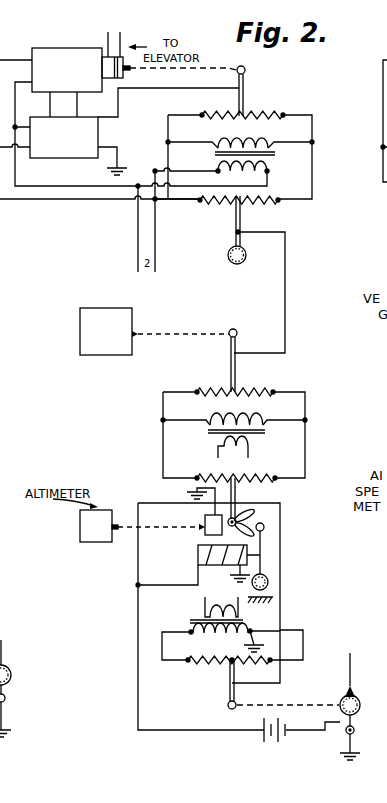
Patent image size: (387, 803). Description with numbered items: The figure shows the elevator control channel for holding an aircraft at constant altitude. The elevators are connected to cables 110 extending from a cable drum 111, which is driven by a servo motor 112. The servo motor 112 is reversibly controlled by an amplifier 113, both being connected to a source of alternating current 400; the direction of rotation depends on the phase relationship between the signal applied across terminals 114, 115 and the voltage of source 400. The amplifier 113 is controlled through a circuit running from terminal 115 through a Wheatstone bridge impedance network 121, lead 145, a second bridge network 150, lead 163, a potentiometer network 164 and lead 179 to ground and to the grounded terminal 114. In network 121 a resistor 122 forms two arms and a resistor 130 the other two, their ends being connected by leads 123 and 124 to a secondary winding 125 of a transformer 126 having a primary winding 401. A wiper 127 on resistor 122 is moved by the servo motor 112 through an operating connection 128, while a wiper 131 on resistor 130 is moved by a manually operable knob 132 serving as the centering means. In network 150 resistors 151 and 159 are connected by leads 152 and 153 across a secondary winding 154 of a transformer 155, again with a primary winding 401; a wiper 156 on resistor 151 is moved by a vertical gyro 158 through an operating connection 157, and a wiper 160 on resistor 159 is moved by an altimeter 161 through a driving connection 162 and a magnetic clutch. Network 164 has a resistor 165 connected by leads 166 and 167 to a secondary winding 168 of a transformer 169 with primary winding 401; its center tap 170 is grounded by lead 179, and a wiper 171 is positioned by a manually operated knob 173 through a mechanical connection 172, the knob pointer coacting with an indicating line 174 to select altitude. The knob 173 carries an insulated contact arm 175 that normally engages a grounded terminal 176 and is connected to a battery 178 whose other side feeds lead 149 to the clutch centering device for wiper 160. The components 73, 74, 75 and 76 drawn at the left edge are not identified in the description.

The indicator dial 73 is at (9, 679).
The pointer 74 is at (2, 636).
The pivot 75 is at (6, 698).
The ground connection 76 is at (4, 709).
The cables 110 is at (107, 34).
The cable drum 111 is at (128, 74).
The servo motor 112 is at (40, 52).
The amplifier 113 is at (55, 153).
The terminal 114 is at (117, 147).
The terminal 115 is at (118, 103).
The impedance network 121 is at (300, 138).
The resistor 122 is at (270, 113).
The lead 123 is at (168, 128).
The lead 124 is at (313, 129).
The secondary winding 125 is at (234, 140).
The transformer 126 is at (211, 157).
The wiper 127 is at (245, 101).
The operating connection 128 is at (238, 66).
The resistor 130 is at (263, 206).
The wiper 131 is at (234, 222).
The manually operable knob 132 is at (229, 250).
The lead 145 is at (286, 269).
The lead 149 is at (137, 658).
The impedance network 150 is at (294, 413).
The resistor 151 is at (249, 389).
The lead 152 is at (306, 411).
The lead 153 is at (163, 411).
The secondary winding 154 is at (229, 416).
The transformer 155 is at (197, 435).
The wiper 156 is at (230, 370).
The operating connection 157 is at (176, 331).
The vertical gyro 158 is at (117, 348).
The resistor 159 is at (254, 475).
The wiper 160 is at (237, 496).
The altimeter 161 is at (98, 533).
The driving connection 162 is at (175, 532).
The lead 163 is at (282, 550).
The impedance network 164 is at (188, 647).
The resistor 165 is at (212, 665).
The lead 166 is at (287, 655).
The lead 167 is at (169, 664).
The secondary winding 168 is at (190, 631).
The transformer 169 is at (179, 615).
The center tap 170 is at (230, 660).
The wiper 171 is at (228, 697).
The mechanical connection 172 is at (305, 703).
The manually operated knob 173 is at (364, 698).
The indicating line 174 is at (352, 664).
The contact arm 175 is at (355, 726).
The terminal 176 is at (355, 738).
The battery 178 is at (264, 733).
The lead 179 is at (255, 637).
The source of alternating current 400 is at (155, 225).
The primary winding 401 is at (268, 172).